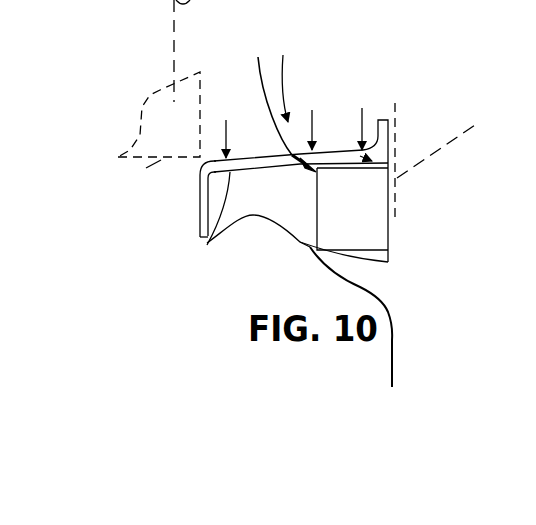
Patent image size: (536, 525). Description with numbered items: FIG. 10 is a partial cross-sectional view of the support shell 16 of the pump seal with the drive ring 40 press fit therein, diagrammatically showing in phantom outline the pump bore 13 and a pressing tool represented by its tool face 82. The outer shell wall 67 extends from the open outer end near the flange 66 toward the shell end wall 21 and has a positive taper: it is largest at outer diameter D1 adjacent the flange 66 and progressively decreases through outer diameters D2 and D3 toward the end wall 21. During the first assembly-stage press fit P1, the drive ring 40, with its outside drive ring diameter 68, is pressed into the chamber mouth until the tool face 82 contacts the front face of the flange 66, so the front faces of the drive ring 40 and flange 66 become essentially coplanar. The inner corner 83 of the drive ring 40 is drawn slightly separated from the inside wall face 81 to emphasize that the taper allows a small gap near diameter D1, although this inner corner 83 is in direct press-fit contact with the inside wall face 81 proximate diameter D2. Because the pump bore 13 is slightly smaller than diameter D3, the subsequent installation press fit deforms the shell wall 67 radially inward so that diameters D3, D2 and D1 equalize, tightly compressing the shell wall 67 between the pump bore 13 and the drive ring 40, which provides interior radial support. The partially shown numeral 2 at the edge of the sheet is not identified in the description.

The vehicle door assembly 2 is at (529, 210).
The pump bore 13 is at (132, 172).
The support shell 16 is at (277, 217).
The shell end wall 21 is at (200, 207).
The drive ring 40 is at (375, 188).
The flange 66 is at (382, 126).
The outer shell wall 67 is at (233, 165).
The outside drive ring diameter 68 is at (338, 167).
The inside wall face 81 is at (362, 338).
The tool face 82 is at (460, 141).
The inner corner 83 is at (263, 91).
The first assembly-stage press fit P1 is at (305, 73).
The largest outer diameter D1 is at (367, 113).
The outer diameter D2 is at (315, 113).
The outer diameter D3 is at (231, 117).